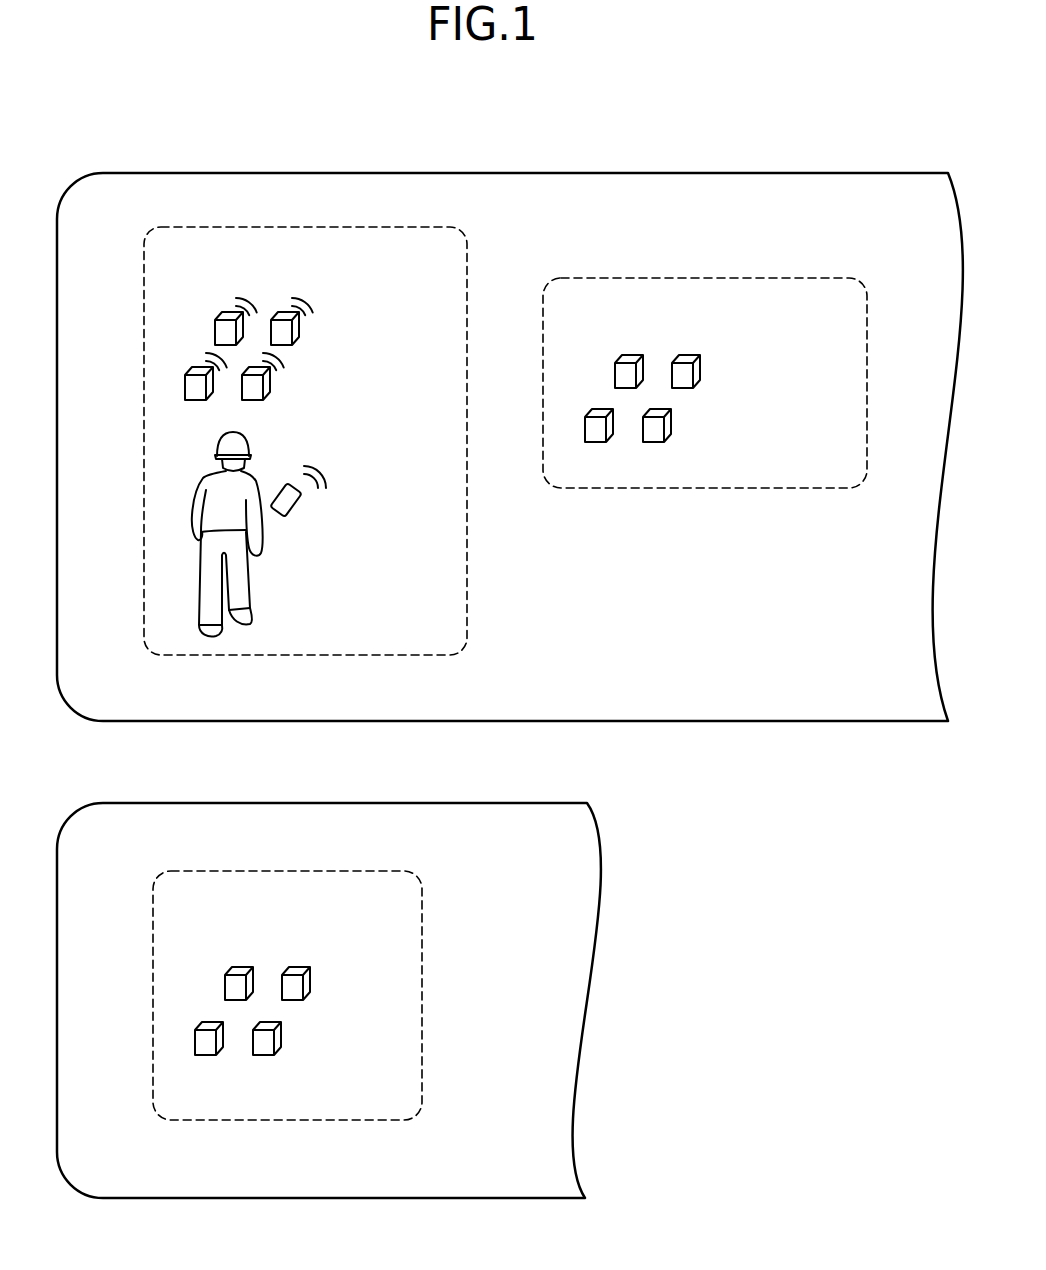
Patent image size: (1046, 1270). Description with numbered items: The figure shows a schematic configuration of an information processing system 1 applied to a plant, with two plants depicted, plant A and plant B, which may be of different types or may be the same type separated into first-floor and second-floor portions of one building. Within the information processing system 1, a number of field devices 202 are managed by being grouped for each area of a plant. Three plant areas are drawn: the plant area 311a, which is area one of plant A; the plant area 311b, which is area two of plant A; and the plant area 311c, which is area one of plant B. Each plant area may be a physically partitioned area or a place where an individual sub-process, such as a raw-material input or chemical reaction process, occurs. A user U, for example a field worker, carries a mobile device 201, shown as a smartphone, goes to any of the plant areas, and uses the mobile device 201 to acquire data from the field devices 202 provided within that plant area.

The information processing system 1 is at (77, 150).
The plant area 311a is at (367, 227).
The plant area 311b is at (778, 262).
The plant area 311c is at (335, 871).
The field device 202 is at (214, 334).
The mobile device 201 is at (302, 498).
The user U is at (252, 572).